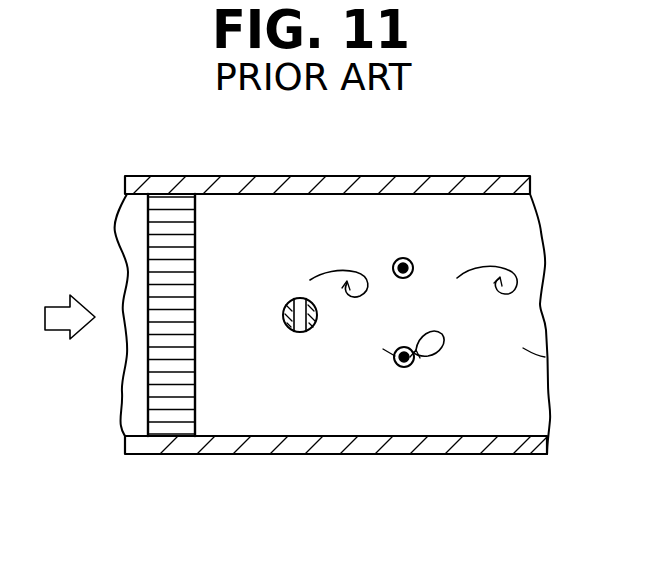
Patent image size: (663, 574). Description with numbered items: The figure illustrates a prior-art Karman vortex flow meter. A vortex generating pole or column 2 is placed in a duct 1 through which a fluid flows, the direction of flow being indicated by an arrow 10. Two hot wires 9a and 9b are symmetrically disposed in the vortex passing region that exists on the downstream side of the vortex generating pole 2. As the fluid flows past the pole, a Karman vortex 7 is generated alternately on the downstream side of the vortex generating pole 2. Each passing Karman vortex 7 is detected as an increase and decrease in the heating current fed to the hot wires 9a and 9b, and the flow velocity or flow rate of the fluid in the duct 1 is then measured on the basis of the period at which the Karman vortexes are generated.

The duct 1 is at (174, 458).
The vortex generating pole 2 is at (297, 333).
The Karman vortex 7 is at (345, 269).
The hot wire 9a is at (412, 259).
The hot wire 9b is at (410, 370).
The arrow 10 is at (60, 330).